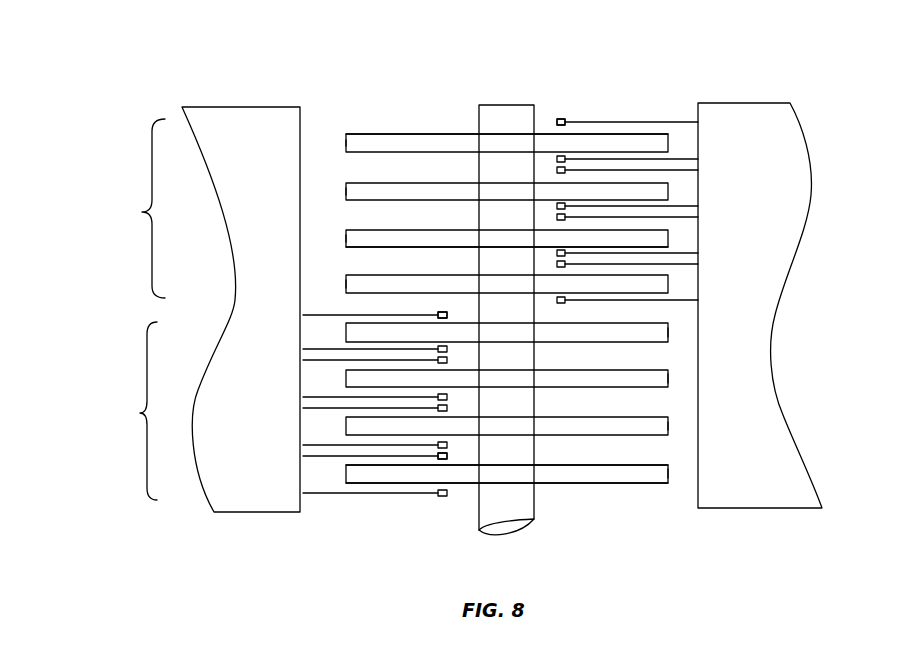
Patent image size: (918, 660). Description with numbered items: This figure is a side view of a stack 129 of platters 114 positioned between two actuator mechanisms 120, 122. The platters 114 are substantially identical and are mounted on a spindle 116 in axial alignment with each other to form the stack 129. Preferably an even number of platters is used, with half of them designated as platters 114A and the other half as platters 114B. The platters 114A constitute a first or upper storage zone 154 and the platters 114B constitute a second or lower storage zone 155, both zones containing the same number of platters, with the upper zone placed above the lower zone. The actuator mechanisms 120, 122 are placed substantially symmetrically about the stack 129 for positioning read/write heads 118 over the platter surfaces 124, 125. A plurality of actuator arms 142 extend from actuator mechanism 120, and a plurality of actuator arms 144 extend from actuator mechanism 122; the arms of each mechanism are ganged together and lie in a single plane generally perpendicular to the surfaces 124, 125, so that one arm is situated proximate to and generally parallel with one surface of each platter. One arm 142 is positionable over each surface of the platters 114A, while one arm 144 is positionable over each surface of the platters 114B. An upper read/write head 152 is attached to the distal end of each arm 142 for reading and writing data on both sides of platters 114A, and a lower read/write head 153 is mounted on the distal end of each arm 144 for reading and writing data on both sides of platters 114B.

The platter 114 is at (346, 190).
The platter of upper storage zone 114A is at (360, 133).
The platter of lower storage zone 114B is at (668, 324).
The spindle 116 is at (537, 520).
The read/write head 118 is at (560, 118).
The actuator mechanism 120 is at (802, 213).
The actuator mechanism 122 is at (243, 300).
The platter surface 124 is at (415, 183).
The platter surface 125 is at (415, 248).
The stack 129 is at (645, 95).
The actuator arm 142 is at (683, 205).
The actuator arm 144 is at (320, 410).
The upper read/write head 152 is at (535, 128).
The lower read/write head 153 is at (447, 458).
The upper storage zone 154 is at (135, 208).
The lower storage zone 155 is at (127, 411).